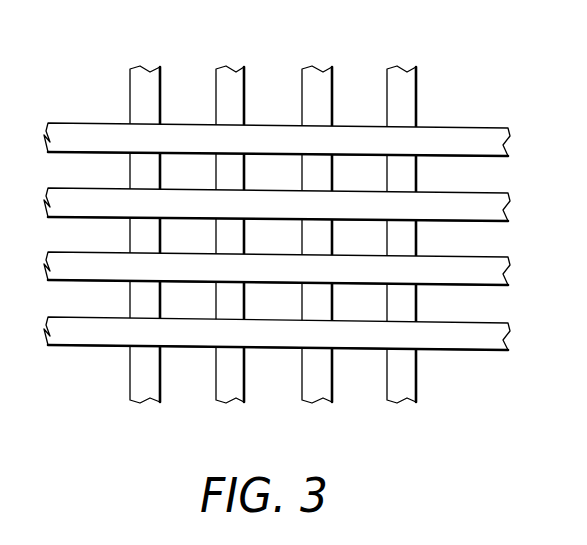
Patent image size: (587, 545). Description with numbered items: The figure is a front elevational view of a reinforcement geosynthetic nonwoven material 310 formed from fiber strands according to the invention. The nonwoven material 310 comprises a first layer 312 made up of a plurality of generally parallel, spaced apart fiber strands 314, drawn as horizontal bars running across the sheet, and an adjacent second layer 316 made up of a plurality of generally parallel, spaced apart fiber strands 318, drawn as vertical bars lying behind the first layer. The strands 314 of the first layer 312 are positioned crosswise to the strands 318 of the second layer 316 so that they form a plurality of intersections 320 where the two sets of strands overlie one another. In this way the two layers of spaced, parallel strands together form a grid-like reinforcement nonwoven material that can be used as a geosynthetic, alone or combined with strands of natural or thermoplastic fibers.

The geosynthetic nonwoven material 310 is at (463, 352).
The first layer 312 is at (127, 383).
The fiber strands 314 is at (244, 375).
The second layer 316 is at (333, 87).
The fiber strands 318 is at (416, 98).
The intersections 320 is at (128, 120).